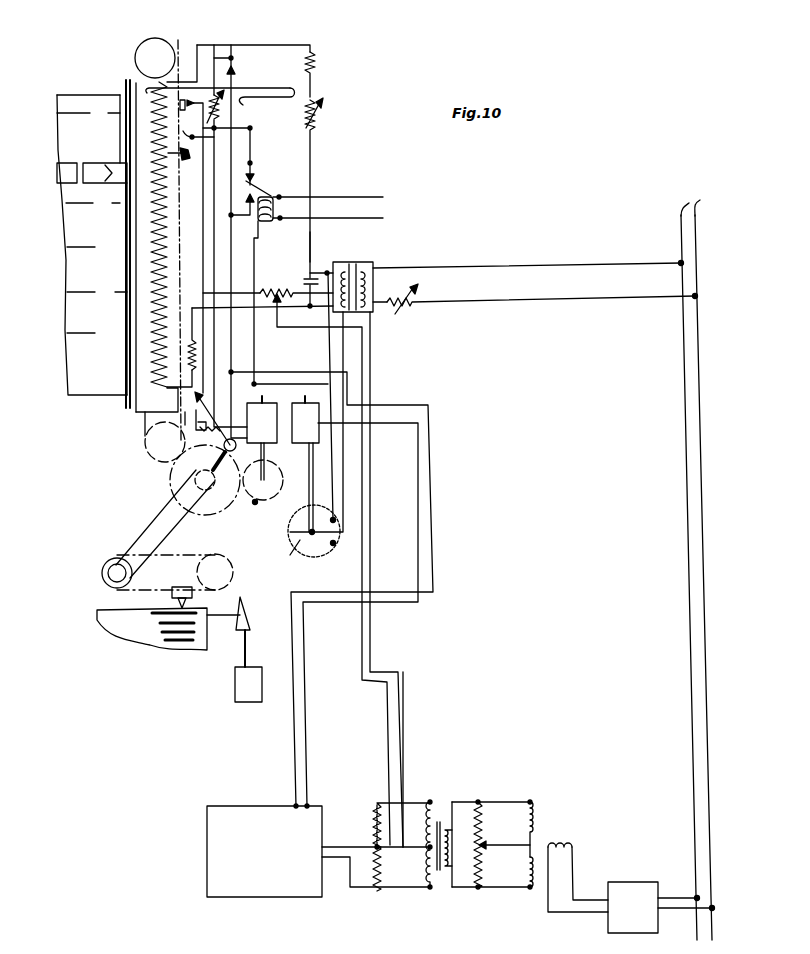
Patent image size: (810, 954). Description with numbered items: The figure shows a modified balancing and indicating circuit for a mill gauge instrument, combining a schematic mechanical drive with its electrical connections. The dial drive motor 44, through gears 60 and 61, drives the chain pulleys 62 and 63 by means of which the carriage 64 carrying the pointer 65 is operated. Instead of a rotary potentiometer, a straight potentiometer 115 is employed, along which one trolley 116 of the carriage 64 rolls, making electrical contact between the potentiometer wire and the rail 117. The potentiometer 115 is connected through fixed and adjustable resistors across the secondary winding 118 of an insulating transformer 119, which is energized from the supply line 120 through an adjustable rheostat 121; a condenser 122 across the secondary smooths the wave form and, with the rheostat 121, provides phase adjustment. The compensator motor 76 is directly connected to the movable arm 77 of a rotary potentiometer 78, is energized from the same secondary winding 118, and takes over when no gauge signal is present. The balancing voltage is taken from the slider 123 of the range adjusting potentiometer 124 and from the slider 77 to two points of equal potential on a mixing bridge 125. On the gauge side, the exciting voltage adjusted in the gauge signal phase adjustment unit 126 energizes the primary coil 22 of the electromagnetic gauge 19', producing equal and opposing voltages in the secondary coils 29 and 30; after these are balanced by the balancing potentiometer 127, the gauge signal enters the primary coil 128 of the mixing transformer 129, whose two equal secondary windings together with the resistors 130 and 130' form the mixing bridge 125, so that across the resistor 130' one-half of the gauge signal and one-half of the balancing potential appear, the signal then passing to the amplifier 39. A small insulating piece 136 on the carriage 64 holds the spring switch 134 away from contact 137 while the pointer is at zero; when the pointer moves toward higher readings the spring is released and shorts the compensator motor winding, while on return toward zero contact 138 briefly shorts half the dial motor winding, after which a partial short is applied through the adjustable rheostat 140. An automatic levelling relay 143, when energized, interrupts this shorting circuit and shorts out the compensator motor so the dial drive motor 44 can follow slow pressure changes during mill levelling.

The chain pulley 63 is at (163, 40).
The pointer 65 is at (93, 183).
The rail 117 is at (132, 407).
The insulating piece 136 is at (166, 160).
The trolley 116 is at (162, 175).
The carriage 64 is at (164, 200).
The straight potentiometer 115 is at (166, 245).
The spring switch 134 is at (292, 90).
The contact 137 is at (236, 93).
The contact 138 is at (214, 137).
The adjustable rheostat 140 is at (244, 148).
The automatic levelling relay 143 is at (256, 188).
The range adjusting potentiometer 124 is at (268, 283).
The condenser 122 is at (310, 276).
The slider 123 is at (272, 328).
The secondary winding 118 is at (344, 264).
The insulating transformer 119 is at (365, 314).
The adjustable rheostat 121 is at (402, 308).
The supply line 120 is at (696, 561).
The dial drive motor 44 is at (262, 438).
The compensator motor 76 is at (305, 464).
The gear 60 is at (263, 489).
The rotary potentiometer 78 is at (310, 559).
The movable arm 77 is at (290, 555).
The chain pulley 62 is at (152, 447).
The gear 61 is at (216, 510).
The amplifier 39 is at (318, 851).
The resistor 130 is at (387, 817).
The resistor 130' is at (365, 879).
The mixing bridge 125 is at (417, 759).
The mixing transformer 129 is at (430, 890).
The primary coil 128 is at (448, 870).
The balancing potentiometer 127 is at (484, 820).
The secondary coil 30 is at (536, 812).
The secondary coil 29 is at (536, 885).
The electromagnetic gauge 19' is at (578, 863).
The primary coil 22 is at (575, 840).
The gauge signal phase adjustment unit 126 is at (661, 907).